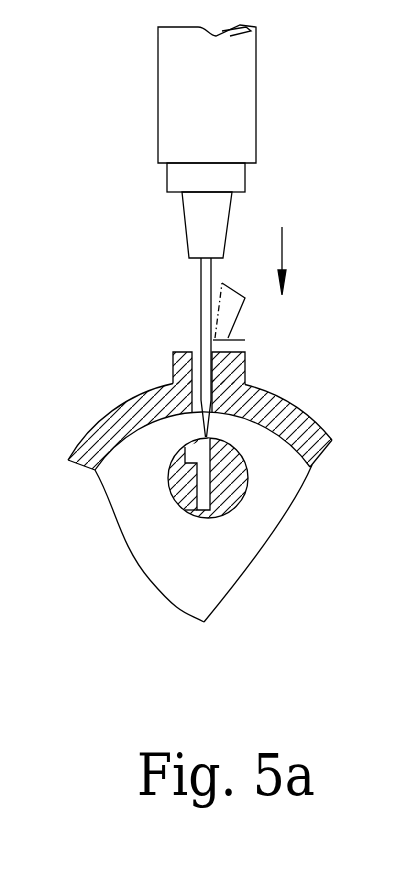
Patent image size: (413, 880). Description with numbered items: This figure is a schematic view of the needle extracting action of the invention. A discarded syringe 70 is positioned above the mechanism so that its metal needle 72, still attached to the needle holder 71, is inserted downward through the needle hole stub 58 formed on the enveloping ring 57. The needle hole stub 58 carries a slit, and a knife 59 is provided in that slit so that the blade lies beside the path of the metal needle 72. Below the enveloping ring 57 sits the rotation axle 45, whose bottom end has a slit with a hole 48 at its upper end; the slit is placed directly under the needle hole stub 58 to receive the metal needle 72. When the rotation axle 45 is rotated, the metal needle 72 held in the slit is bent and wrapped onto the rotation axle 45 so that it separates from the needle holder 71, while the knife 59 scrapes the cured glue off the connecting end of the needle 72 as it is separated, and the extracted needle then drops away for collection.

The discarded syringe 70 is at (245, 108).
The needle holder 71 is at (220, 218).
The metal needle 72 is at (245, 340).
The knife 59 is at (225, 315).
The needle hole stub 58 is at (198, 360).
The enveloping ring 57 is at (128, 412).
The hole 48 is at (200, 453).
The rotation axle 45 is at (247, 492).